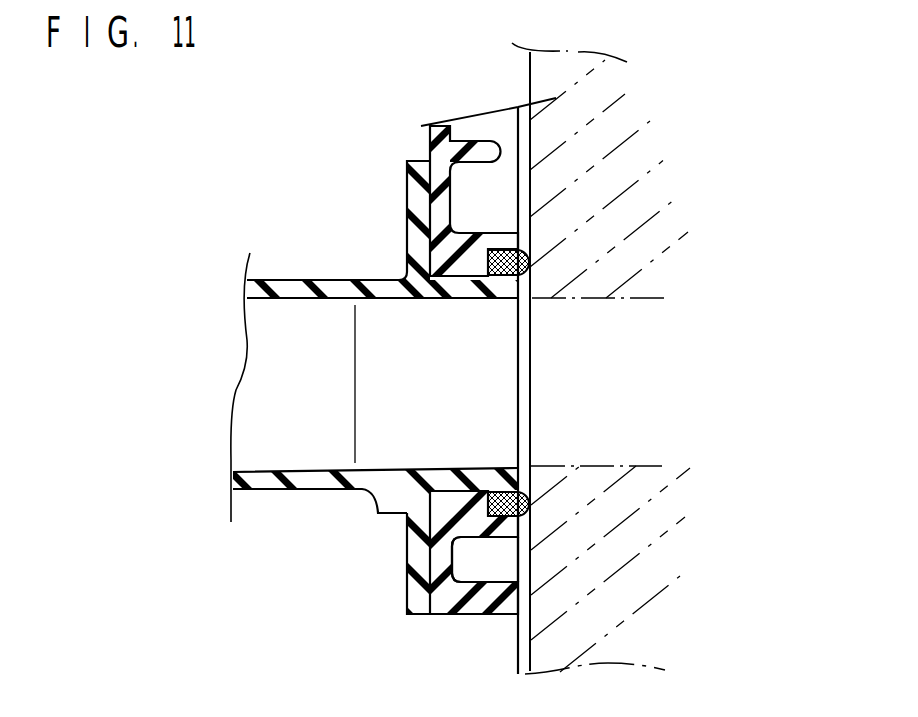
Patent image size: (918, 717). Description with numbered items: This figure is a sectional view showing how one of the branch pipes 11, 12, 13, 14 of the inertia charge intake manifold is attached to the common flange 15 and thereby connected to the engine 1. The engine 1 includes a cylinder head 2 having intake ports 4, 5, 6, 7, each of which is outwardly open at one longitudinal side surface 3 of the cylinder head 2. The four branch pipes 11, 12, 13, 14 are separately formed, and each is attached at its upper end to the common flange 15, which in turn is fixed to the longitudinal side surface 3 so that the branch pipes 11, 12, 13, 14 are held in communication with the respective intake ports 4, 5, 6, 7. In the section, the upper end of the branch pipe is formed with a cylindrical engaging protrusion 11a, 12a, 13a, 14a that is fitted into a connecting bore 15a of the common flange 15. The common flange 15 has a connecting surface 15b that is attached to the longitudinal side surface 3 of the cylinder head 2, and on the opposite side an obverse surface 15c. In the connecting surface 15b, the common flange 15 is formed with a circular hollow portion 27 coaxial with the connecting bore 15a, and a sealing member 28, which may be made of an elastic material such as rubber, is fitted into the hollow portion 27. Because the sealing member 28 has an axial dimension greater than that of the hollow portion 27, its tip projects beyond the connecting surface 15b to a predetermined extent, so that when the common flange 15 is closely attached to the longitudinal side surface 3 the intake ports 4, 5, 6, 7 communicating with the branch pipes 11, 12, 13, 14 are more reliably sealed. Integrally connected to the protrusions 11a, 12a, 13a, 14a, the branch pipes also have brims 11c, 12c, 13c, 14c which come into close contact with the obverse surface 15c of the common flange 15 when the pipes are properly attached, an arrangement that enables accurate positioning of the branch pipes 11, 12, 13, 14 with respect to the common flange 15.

The engine 1 is at (659, 116).
The cylinder head 2 is at (599, 50).
The longitudinal side surface 3 is at (527, 90).
The intake port 4 is at (592, 448).
The intake port 5 is at (682, 536).
The intake port 6 is at (682, 536).
The intake port 7 is at (682, 536).
The branch pipe 11 is at (271, 487).
The branch pipe 12 is at (422, 451).
The branch pipe 13 is at (422, 451).
The branch pipe 14 is at (422, 451).
The cylindrical engaging protrusion 11a is at (457, 285).
The cylindrical engaging protrusion 12a is at (334, 225).
The cylindrical engaging protrusion 13a is at (334, 225).
The cylindrical engaging protrusion 14a is at (334, 225).
The brim 11c is at (408, 182).
The brim 12c is at (299, 339).
The brim 13c is at (299, 339).
The brim 14c is at (299, 339).
The common flange 15 is at (452, 614).
The connecting bore 15a is at (481, 470).
The connecting surface 15b is at (532, 557).
The obverse surface 15c is at (421, 126).
The hollow portion 27 is at (512, 490).
The sealing member 28 is at (528, 262).